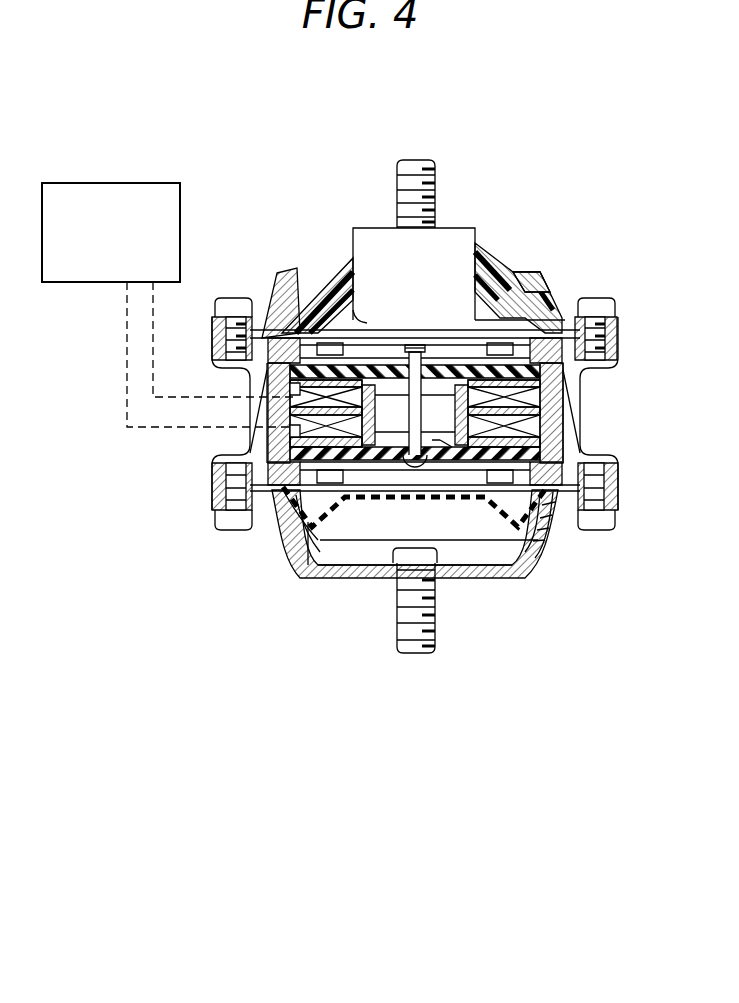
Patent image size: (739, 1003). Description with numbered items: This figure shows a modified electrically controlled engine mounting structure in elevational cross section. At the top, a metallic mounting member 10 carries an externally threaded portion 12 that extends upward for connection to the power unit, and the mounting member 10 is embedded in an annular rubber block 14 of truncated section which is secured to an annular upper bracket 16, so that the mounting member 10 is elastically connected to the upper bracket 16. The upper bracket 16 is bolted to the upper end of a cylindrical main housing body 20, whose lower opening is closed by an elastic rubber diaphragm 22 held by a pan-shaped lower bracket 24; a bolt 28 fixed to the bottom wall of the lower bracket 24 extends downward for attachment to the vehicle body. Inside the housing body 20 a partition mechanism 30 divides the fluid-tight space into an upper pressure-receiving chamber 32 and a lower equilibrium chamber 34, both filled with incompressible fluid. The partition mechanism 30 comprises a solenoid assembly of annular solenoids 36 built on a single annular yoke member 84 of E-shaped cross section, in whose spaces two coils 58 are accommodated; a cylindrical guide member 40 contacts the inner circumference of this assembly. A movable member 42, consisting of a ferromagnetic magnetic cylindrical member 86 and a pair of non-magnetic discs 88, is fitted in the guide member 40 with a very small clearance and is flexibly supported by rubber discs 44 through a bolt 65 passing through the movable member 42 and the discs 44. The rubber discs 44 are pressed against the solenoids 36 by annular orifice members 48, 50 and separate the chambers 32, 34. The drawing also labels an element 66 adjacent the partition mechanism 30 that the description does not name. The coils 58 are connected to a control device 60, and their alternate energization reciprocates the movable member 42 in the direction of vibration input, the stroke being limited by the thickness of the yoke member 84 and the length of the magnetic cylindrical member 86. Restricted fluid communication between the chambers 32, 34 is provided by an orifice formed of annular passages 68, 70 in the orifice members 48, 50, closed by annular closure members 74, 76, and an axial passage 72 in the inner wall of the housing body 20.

The mounting member 10 is at (455, 233).
The externally threaded portion 12 is at (415, 168).
The rubber block 14 is at (490, 268).
The upper bracket 16 is at (545, 287).
The main housing body 20 is at (565, 428).
The elastic diaphragm 22 is at (547, 520).
The lower bracket 24 is at (532, 565).
The bolt 28 is at (418, 643).
The partition mechanism 30 is at (479, 470).
The pressure-receiving chamber 32 is at (318, 322).
The equilibrium chamber 34 is at (308, 498).
The annular solenoids 36 is at (547, 393).
The cylindrical guide member 40 is at (360, 497).
The movable member 42 is at (441, 442).
The rubber discs 44 is at (522, 370).
The upper orifice member 48 is at (565, 335).
The lower orifice member 50 is at (560, 506).
The coils 58 is at (300, 387).
The control device 60 is at (122, 183).
The bolt 65 is at (382, 499).
The inner plates 66 is at (385, 347).
The annular passage 68 is at (280, 337).
The annular passage 70 is at (290, 492).
The axial passage 72 is at (545, 420).
The annular closure member 74 is at (284, 332).
The annular closure member 76 is at (305, 510).
The yoke member 84 is at (295, 404).
The magnetic cylindrical member 86 is at (378, 336).
The non-magnetic discs 88 is at (440, 345).